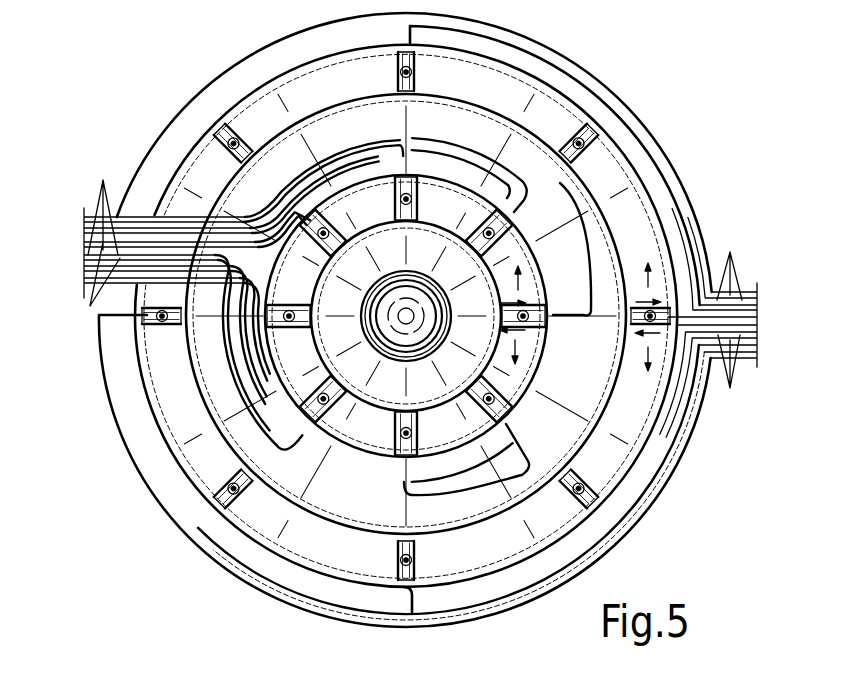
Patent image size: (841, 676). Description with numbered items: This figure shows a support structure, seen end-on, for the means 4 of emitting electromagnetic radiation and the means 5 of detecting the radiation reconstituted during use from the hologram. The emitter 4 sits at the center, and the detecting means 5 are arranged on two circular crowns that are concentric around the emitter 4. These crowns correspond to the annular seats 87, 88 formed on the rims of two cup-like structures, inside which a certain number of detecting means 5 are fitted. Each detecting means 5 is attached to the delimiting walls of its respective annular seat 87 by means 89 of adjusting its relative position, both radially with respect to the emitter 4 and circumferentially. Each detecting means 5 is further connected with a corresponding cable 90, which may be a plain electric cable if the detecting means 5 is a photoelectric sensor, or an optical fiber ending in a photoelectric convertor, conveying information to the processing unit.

The means of emitting electromagnetic radiation 4 is at (402, 342).
The means of detecting the radiation 5 is at (419, 72).
The annular seat 87 is at (520, 372).
The annular seat 88 is at (546, 113).
The means of adjusting the relative position 89 is at (397, 83).
The cable 90 is at (408, 293).